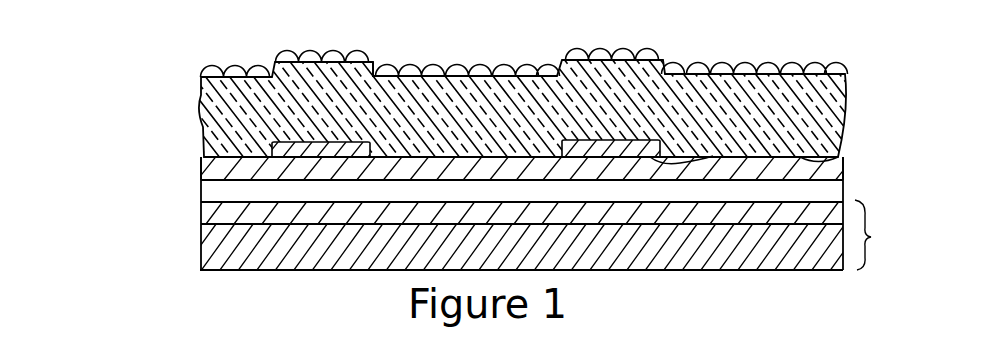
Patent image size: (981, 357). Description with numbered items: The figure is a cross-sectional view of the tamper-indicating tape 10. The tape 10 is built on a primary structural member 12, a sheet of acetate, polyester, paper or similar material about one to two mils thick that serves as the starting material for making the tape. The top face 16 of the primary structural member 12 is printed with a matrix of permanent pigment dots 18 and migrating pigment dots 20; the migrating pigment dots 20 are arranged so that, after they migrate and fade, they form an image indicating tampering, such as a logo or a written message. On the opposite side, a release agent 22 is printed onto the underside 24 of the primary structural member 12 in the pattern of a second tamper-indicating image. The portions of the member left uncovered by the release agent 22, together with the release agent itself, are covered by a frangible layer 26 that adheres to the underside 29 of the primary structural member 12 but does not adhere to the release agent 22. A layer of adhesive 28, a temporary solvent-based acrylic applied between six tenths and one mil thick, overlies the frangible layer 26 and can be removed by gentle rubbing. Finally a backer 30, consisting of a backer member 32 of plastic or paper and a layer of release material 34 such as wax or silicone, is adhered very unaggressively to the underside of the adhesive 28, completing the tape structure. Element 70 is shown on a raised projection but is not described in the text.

The tape 10 is at (157, 155).
The primary structural member 12 is at (224, 100).
The top face 16 is at (378, 63).
The permanent pigment dots 18 is at (645, 50).
The migrating pigment dots 20 is at (712, 65).
The release agent 22 is at (273, 143).
The underside 24 is at (695, 158).
The frangible layer 26 is at (846, 170).
The layer of adhesive 28 is at (220, 190).
The underside 29 is at (840, 157).
The backer 30 is at (879, 235).
The backer member 32 is at (214, 262).
The layer of release material 34 is at (222, 212).
The raised projection 70 is at (357, 50).